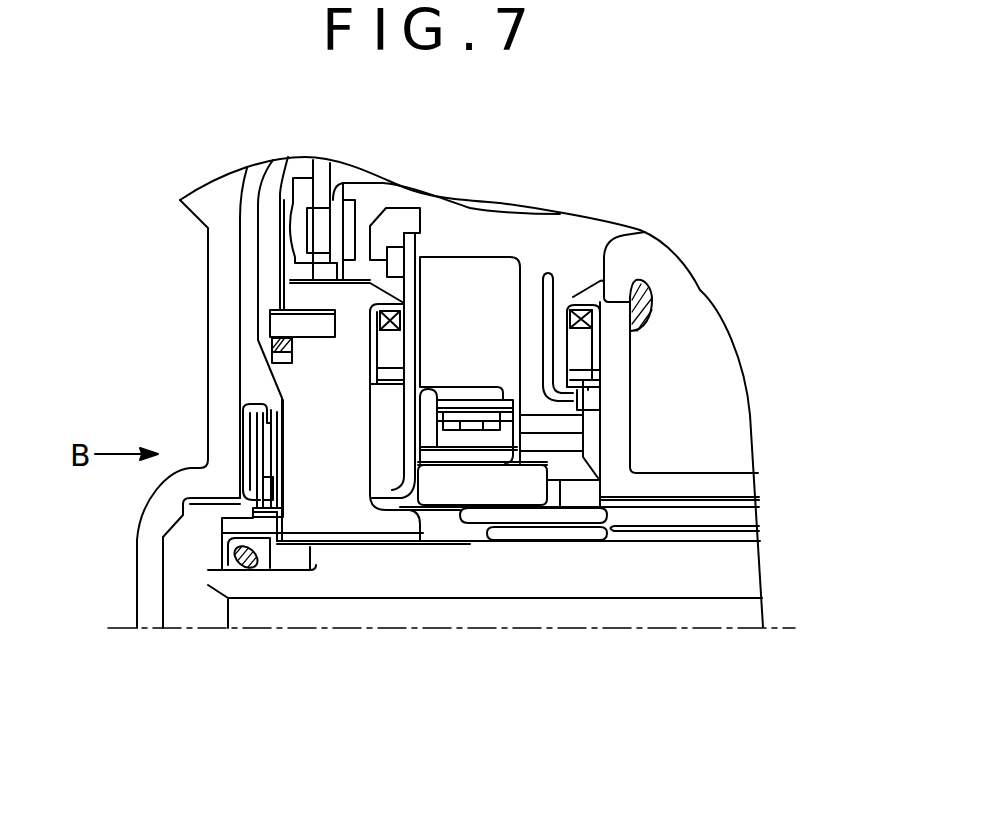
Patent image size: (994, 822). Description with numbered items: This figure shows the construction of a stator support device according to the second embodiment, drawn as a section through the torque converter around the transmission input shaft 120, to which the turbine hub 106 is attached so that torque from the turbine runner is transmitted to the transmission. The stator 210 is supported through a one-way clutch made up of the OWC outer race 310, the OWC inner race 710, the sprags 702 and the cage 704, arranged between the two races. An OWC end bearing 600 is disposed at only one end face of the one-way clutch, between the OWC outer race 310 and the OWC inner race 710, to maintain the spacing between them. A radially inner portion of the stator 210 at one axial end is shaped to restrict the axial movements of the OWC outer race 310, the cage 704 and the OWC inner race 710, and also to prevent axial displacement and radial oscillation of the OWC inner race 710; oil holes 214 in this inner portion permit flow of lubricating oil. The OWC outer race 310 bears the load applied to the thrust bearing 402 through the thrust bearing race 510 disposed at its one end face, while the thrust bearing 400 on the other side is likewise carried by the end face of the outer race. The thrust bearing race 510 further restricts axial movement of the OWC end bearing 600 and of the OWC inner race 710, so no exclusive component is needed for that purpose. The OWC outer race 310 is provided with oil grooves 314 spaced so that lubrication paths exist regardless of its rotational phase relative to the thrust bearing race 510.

The turbine hub 106 is at (353, 512).
The transmission input shaft 120 is at (597, 578).
The stator 210 is at (477, 278).
The oil holes 214 is at (543, 417).
The OWC outer race 310 is at (602, 277).
The OWC outer race oil grooves 314 is at (422, 266).
The thrust bearing 400 is at (653, 305).
The thrust bearing 402 is at (383, 335).
The thrust bearing race 510 is at (400, 358).
The OWC end bearing 600 is at (420, 397).
The sprags 702 is at (513, 452).
The cage 704 is at (517, 390).
The OWC inner race 710 is at (500, 483).